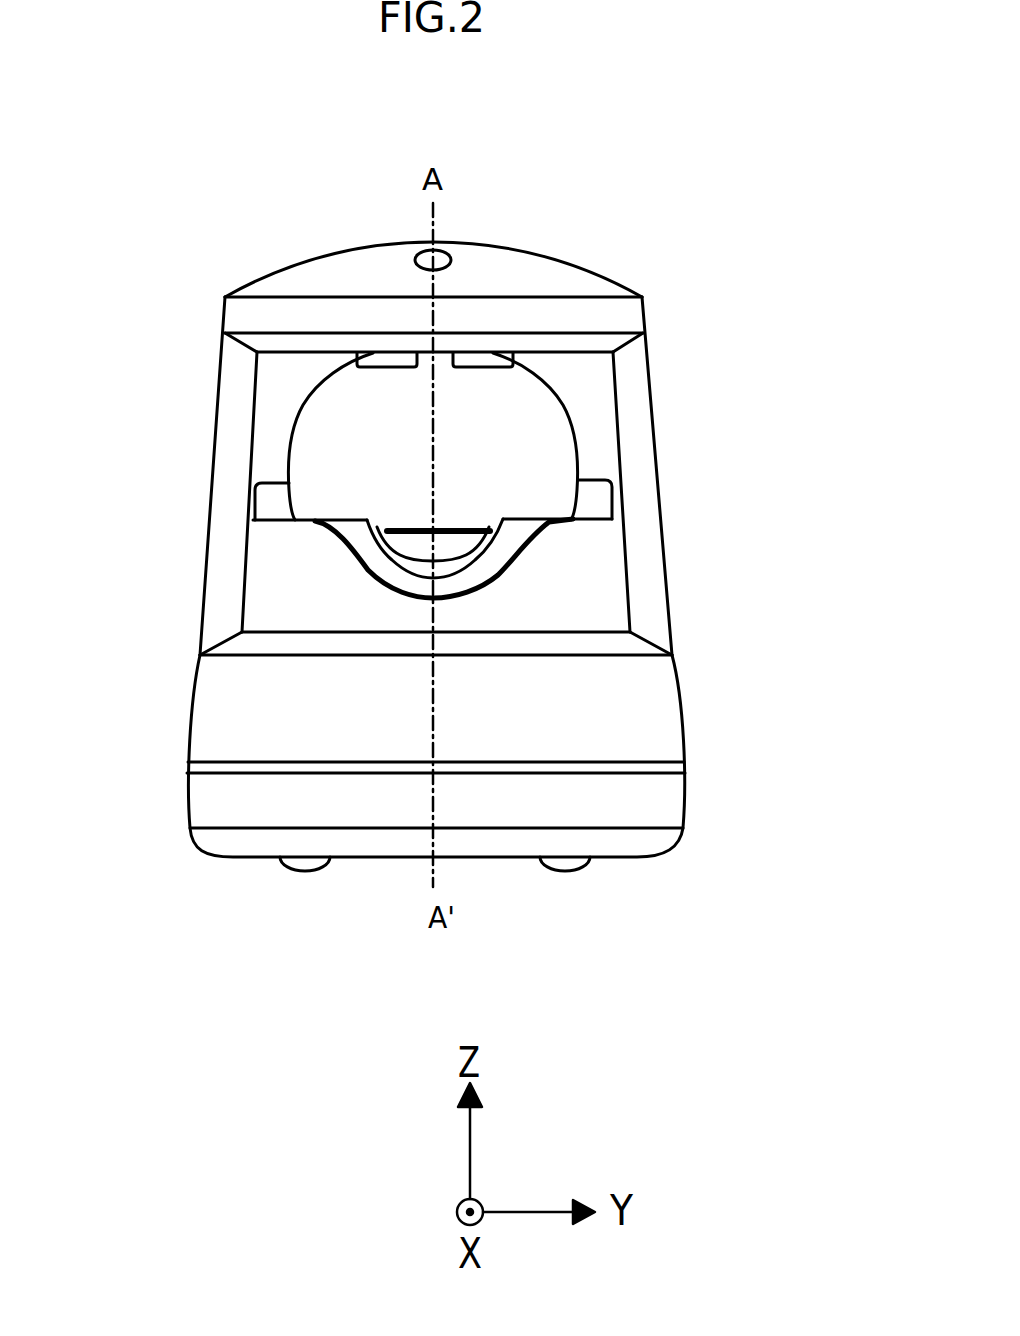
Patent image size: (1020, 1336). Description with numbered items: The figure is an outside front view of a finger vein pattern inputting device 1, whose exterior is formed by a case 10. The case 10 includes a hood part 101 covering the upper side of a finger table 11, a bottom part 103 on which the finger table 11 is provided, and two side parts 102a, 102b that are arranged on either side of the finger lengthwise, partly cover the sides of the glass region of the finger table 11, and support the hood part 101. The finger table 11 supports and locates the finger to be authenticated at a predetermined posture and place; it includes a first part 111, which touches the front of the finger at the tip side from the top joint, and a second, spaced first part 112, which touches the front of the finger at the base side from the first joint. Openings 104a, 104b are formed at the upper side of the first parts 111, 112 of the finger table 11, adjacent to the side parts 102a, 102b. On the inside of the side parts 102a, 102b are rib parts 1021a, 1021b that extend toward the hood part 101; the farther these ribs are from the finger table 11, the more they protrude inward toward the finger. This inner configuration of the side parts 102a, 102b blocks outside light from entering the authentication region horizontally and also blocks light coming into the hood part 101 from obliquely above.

The finger vein pattern inputting device 1 is at (767, 120).
The case 10 is at (542, 268).
The hood part 101 is at (313, 277).
The side part 102a is at (652, 378).
The side part 102b is at (240, 480).
The rib part 1021a is at (577, 392).
The rib part 1021b is at (280, 394).
The bottom part 103 is at (240, 707).
The opening 104a is at (389, 395).
The opening 104b is at (617, 440).
The finger table 11 is at (300, 578).
The first part 111 is at (467, 557).
The first part 112 is at (493, 580).